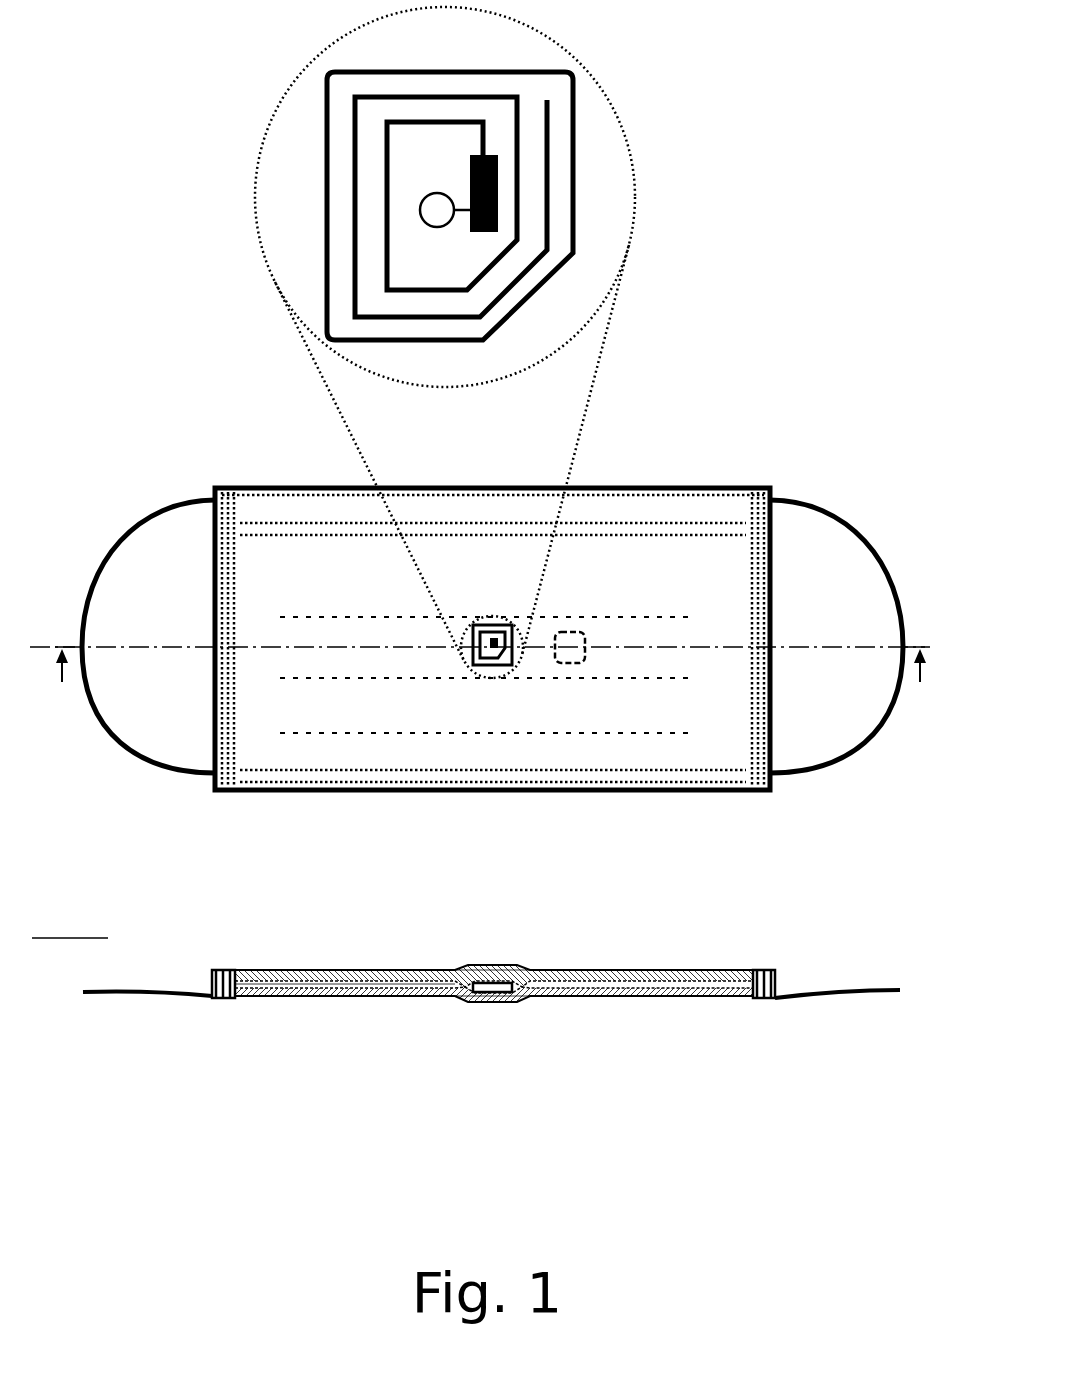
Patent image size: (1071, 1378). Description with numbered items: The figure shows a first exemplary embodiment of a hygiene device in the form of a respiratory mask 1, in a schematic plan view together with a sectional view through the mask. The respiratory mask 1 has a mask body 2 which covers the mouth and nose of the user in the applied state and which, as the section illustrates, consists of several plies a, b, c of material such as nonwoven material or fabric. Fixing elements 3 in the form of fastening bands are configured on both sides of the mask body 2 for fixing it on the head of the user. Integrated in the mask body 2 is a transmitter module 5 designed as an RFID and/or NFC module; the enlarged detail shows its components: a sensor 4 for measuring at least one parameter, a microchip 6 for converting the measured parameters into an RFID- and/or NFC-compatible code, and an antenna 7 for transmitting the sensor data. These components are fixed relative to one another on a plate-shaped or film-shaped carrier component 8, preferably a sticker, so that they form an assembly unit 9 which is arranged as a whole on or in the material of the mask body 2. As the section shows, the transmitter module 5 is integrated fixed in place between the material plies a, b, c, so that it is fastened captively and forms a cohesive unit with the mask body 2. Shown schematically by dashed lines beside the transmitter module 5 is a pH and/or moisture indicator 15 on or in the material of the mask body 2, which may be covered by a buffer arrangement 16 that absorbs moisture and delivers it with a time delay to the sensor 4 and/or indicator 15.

The respiratory mask 1 is at (822, 383).
The mask body 2 is at (630, 752).
The fixing elements 3 is at (148, 512).
The sensor 4 is at (420, 210).
The transmitter module 5 is at (550, 57).
The microchip 6 is at (498, 187).
The antenna 7 is at (522, 273).
The carrier component 8 is at (575, 97).
The assembly unit 9 is at (663, 2).
The pH and/or moisture indicator 15 is at (577, 627).
The buffer arrangement 16 is at (570, 647).
The material ply a is at (268, 973).
The material ply b is at (322, 983).
The material ply c is at (388, 993).